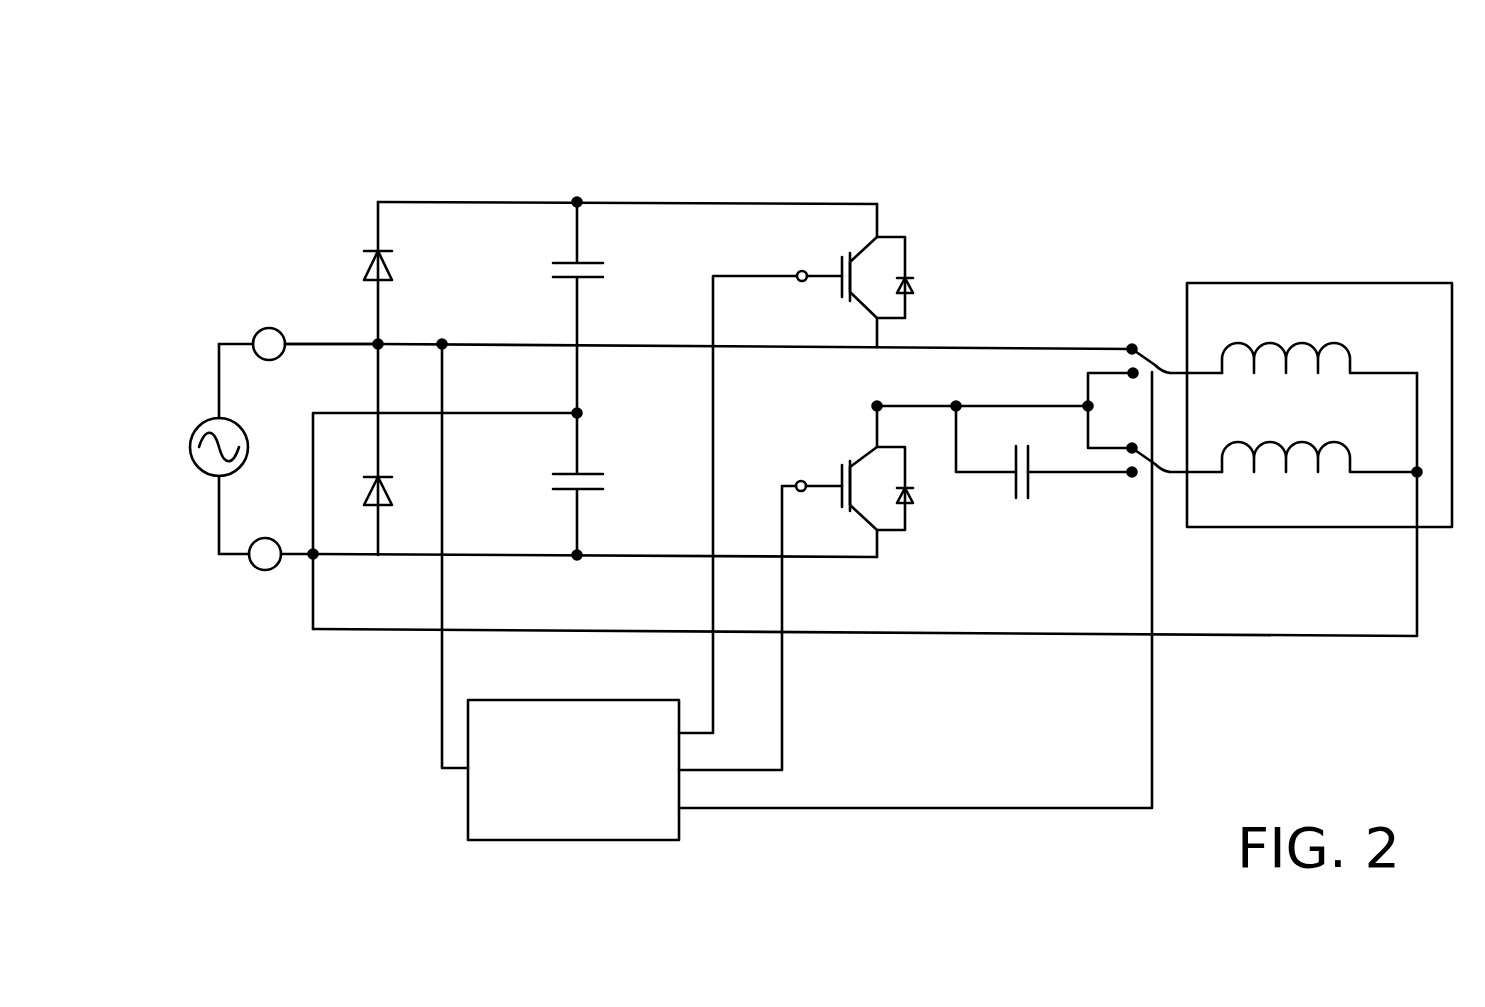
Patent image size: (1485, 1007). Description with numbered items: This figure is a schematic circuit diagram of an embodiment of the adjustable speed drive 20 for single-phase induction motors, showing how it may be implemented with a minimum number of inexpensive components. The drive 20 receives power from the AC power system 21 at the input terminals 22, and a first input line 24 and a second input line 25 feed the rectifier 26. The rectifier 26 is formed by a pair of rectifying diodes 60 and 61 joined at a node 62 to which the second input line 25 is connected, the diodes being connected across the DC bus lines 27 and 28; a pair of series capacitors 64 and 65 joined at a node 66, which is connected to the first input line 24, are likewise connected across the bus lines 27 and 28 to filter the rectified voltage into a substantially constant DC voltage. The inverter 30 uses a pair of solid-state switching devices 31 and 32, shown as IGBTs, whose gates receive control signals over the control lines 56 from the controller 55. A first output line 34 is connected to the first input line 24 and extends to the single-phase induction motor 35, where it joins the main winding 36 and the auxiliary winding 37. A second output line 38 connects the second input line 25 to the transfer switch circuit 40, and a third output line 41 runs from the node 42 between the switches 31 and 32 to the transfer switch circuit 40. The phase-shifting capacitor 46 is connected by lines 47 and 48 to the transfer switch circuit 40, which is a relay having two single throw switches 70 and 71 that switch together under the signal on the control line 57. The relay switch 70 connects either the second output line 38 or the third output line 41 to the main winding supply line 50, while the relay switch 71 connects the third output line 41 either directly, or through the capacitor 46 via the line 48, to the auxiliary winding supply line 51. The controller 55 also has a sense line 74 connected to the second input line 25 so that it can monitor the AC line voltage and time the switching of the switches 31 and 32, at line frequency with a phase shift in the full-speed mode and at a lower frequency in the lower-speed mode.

The adjustable speed drive 20 is at (393, 155).
The AC power system 21 is at (207, 476).
The input terminals 22 is at (258, 333).
The first input line 24 is at (297, 562).
The second input line 25 is at (312, 343).
The rectifier 26 is at (522, 180).
The DC bus line 27 is at (725, 202).
The DC bus line 28 is at (505, 553).
The inverter 30 is at (924, 160).
The controllable switch 31 is at (912, 256).
The controllable switch 32 is at (836, 467).
The first output line 34 is at (1325, 637).
The single-phase induction motor 35 is at (1308, 283).
The main winding 36 is at (1337, 345).
The auxiliary winding 37 is at (1290, 460).
The second output line 38 is at (1000, 347).
The transfer switch circuit 40 is at (1118, 257).
The third output line 41 is at (934, 375).
The node 42 is at (870, 401).
The phase-shifting capacitor 46 is at (1013, 482).
The line 47 is at (983, 473).
The line 48 is at (1098, 473).
The main winding supply line 50 is at (1172, 372).
The auxiliary winding supply line 51 is at (1174, 480).
The controller 55 is at (468, 816).
The control lines 56 is at (711, 655).
The control line 57 is at (1020, 808).
The rectifying diode 60 is at (366, 490).
The rectifying diode 61 is at (395, 272).
The node 62 is at (382, 342).
The capacitor 64 is at (598, 492).
The capacitor 65 is at (598, 280).
The node 66 is at (577, 413).
The relay switch 70 is at (1147, 347).
The relay switch 71 is at (1142, 458).
The sense line 74 is at (441, 700).